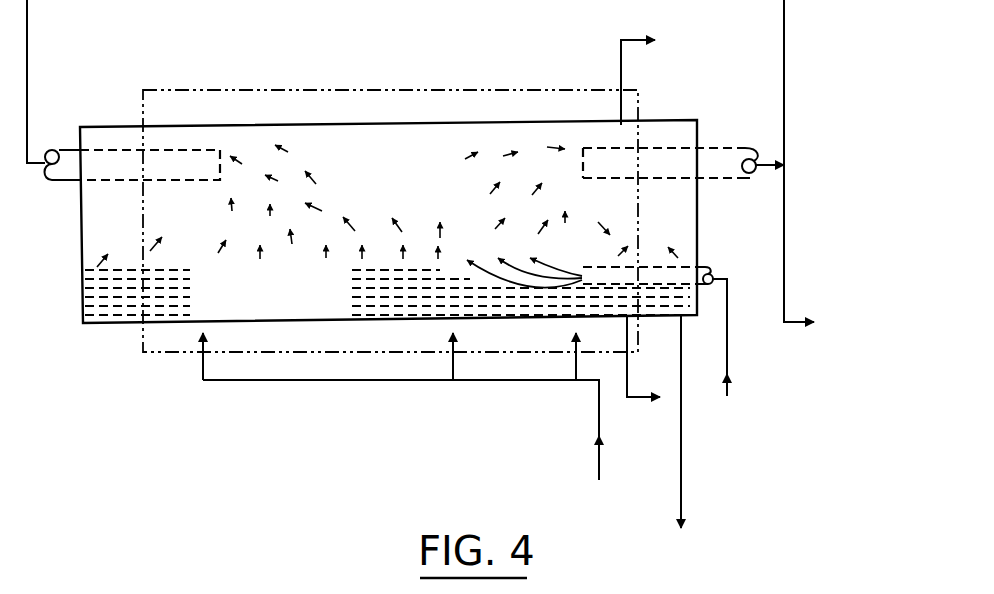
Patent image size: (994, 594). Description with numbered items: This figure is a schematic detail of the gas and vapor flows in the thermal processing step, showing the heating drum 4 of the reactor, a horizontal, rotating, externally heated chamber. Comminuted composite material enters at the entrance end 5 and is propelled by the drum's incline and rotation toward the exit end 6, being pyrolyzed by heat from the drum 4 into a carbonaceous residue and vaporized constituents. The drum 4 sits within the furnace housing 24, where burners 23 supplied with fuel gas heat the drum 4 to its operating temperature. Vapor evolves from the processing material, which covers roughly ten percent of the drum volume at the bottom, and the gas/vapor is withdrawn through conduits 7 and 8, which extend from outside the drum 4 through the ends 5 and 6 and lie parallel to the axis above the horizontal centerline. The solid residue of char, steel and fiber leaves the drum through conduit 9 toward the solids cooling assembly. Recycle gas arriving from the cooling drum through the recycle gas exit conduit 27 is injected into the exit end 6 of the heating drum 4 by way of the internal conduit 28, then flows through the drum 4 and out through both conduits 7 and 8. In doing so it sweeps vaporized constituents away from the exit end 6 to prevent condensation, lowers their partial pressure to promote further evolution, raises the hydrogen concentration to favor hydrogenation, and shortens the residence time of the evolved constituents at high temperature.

The drum 4 is at (352, 124).
The entrance end 5 is at (82, 278).
The exit end 6 is at (699, 214).
The conduit 7 is at (166, 148).
The conduit 8 is at (656, 146).
The conduit 9 is at (683, 485).
The burners 23 is at (312, 382).
The furnace housing 24 is at (176, 355).
The recycle gas exit conduit 27 is at (732, 360).
The internal conduit 28 is at (685, 263).